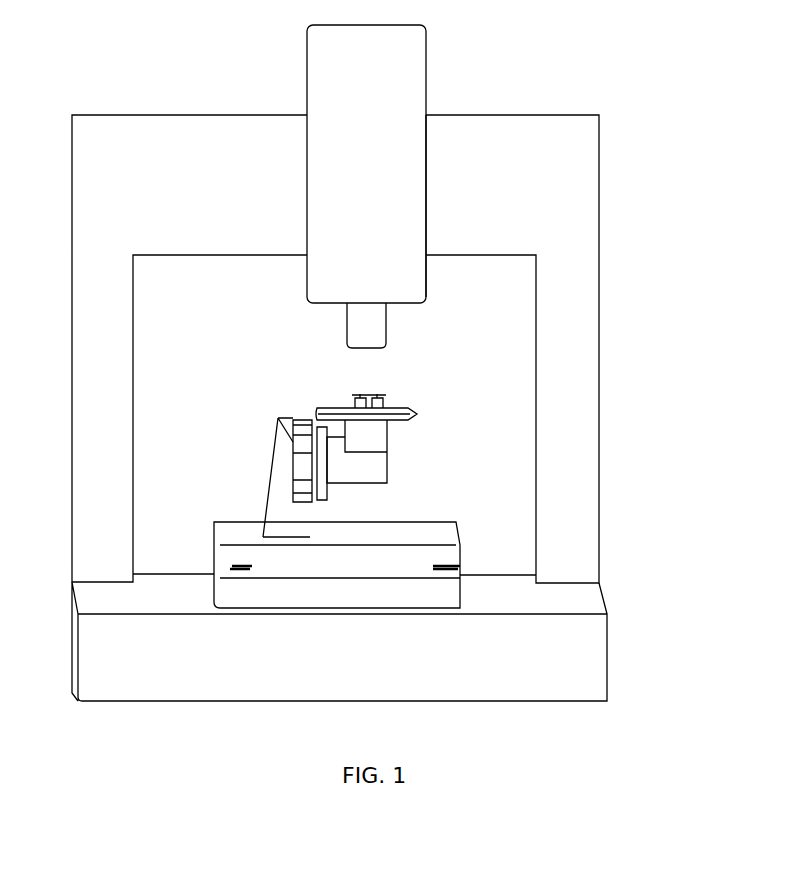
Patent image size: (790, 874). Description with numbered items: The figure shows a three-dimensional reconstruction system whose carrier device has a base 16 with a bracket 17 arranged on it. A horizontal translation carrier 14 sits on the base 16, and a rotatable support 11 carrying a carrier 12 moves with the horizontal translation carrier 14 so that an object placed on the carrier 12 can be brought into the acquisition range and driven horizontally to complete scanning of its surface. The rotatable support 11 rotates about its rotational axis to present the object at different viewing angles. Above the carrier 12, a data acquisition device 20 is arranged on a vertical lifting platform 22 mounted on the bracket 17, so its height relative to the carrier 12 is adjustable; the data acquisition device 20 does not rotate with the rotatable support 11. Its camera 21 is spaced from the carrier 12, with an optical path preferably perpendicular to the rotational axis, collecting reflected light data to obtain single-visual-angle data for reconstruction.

The rotatable support 11 is at (380, 472).
The carrier 12 is at (417, 414).
The horizontal translation carrier 14 is at (460, 545).
The base 16 is at (587, 655).
The bracket 17 is at (542, 115).
The data acquisition device 20 is at (407, 93).
The camera 21 is at (386, 337).
The vertical lifting platform 22 is at (426, 193).